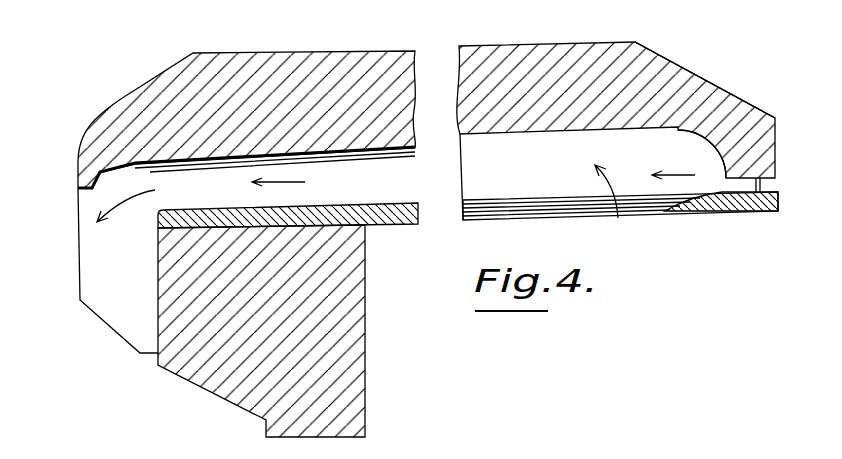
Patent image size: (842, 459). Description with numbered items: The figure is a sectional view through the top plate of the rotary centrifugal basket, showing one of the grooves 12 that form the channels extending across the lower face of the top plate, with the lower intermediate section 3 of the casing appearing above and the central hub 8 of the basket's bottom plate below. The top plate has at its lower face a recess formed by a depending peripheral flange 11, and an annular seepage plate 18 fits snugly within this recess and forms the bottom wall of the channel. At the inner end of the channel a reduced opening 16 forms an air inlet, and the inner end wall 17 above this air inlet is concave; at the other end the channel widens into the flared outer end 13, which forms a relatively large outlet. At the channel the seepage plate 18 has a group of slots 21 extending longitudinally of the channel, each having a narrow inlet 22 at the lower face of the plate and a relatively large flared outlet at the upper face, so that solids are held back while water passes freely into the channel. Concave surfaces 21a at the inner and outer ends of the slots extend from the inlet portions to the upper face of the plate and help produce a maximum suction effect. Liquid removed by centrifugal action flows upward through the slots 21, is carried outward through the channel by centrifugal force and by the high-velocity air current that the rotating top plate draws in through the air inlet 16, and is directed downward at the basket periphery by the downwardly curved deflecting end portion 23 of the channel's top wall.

The lower intermediate section 3 is at (557, 43).
The central hub 8 is at (701, 79).
The depending peripheral flange 11 is at (108, 330).
The grooves 12 is at (473, 181).
The outer end of the channel 13 is at (126, 222).
The reduced opening 16 is at (780, 176).
The inner end wall 17 is at (716, 148).
The seepage plate 18 is at (383, 225).
The slots 21 is at (516, 205).
The concave surfaces 21a is at (690, 212).
The narrow inlets 22 is at (566, 212).
The downwardly curved deflecting end portion 23 is at (80, 176).